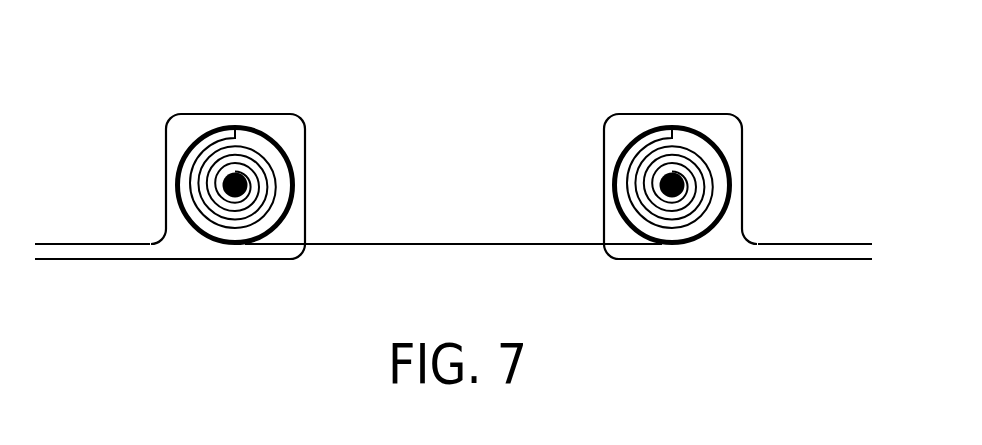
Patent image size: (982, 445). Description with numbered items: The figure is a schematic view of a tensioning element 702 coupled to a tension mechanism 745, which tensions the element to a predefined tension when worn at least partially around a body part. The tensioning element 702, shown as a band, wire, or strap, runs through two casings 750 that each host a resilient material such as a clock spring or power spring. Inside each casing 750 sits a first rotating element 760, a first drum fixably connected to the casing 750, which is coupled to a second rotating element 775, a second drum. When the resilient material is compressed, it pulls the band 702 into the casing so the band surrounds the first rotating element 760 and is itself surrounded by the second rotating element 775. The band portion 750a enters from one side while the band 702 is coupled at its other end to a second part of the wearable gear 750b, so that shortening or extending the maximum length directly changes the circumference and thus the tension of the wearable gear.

The tension mechanism 745 is at (105, 93).
The second rotating element 775 is at (207, 143).
The casing 750 is at (193, 233).
The first rotating element 760 is at (235, 192).
The tensioning element 702 is at (462, 244).
The web inlet portion 750a is at (77, 244).
The second part of the wearable gear 750b is at (822, 244).